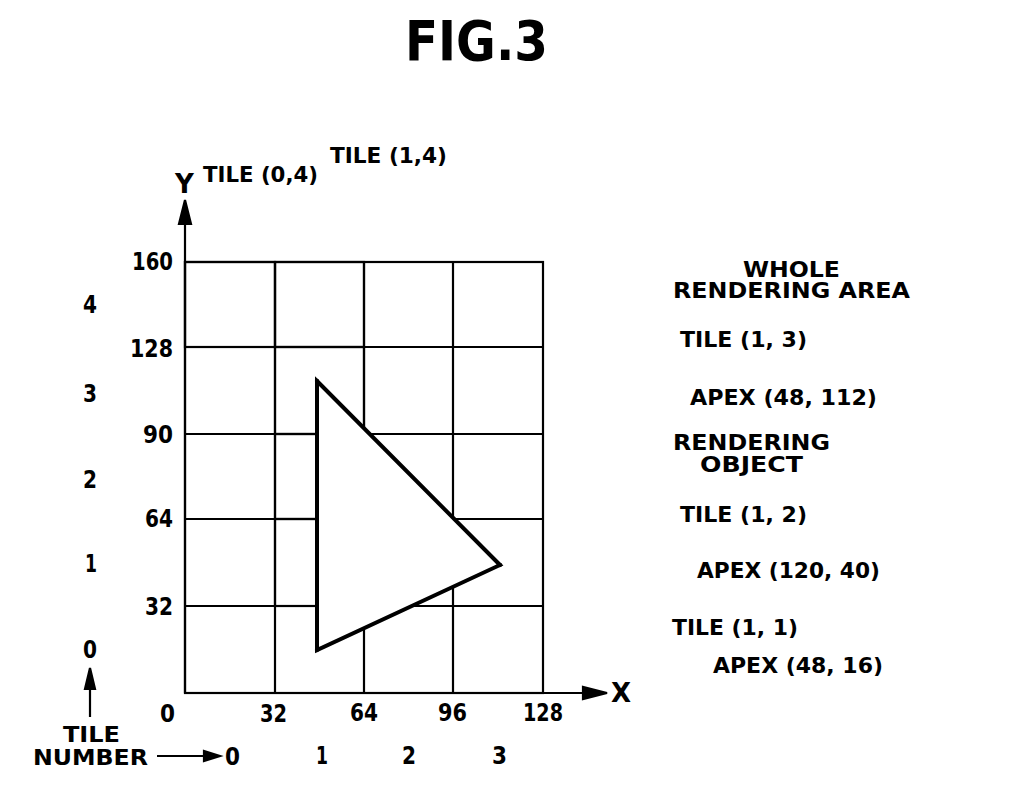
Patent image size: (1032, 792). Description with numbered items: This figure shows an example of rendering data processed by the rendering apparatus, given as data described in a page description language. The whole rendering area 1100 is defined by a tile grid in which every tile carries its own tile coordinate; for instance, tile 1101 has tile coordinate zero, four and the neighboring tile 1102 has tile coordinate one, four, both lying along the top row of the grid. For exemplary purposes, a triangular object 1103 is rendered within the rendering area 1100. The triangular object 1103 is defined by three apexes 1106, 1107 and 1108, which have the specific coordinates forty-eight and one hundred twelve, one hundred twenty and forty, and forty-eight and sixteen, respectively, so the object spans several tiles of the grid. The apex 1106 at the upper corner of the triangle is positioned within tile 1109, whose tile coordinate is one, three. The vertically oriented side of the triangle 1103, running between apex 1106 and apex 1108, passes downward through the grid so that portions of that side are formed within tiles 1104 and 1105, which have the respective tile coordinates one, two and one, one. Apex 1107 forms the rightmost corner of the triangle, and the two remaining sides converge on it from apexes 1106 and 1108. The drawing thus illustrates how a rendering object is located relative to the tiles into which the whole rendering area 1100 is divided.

The whole rendering area 1100 is at (543, 281).
The tile 1101 is at (238, 280).
The tile 1102 is at (328, 283).
The triangular object 1103 is at (367, 470).
The tile 1104 is at (303, 505).
The tile 1105 is at (297, 583).
The apex 1106 is at (318, 380).
The apex 1107 is at (500, 565).
The apex 1108 is at (320, 652).
The tile 1109 is at (295, 355).